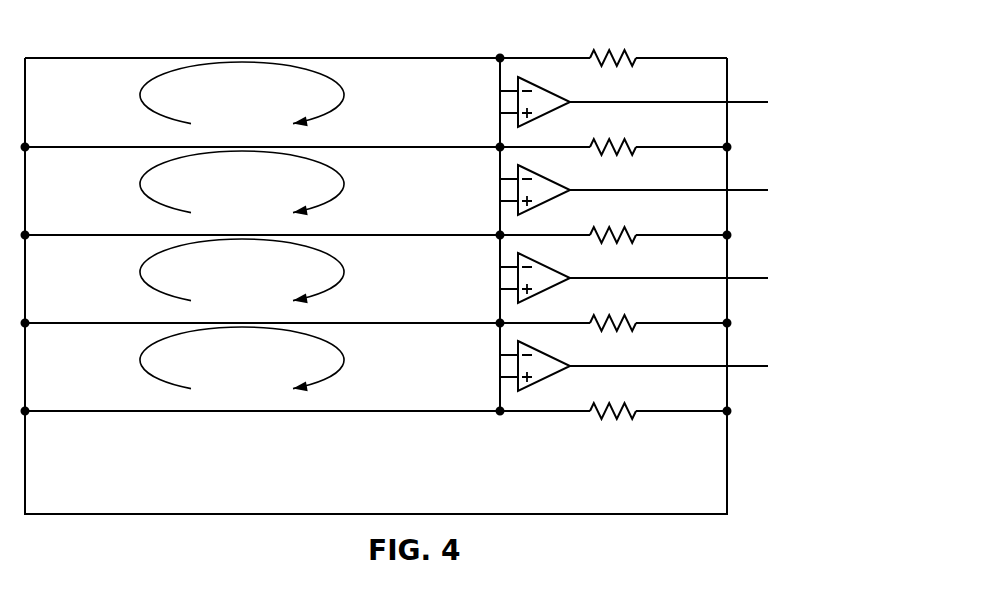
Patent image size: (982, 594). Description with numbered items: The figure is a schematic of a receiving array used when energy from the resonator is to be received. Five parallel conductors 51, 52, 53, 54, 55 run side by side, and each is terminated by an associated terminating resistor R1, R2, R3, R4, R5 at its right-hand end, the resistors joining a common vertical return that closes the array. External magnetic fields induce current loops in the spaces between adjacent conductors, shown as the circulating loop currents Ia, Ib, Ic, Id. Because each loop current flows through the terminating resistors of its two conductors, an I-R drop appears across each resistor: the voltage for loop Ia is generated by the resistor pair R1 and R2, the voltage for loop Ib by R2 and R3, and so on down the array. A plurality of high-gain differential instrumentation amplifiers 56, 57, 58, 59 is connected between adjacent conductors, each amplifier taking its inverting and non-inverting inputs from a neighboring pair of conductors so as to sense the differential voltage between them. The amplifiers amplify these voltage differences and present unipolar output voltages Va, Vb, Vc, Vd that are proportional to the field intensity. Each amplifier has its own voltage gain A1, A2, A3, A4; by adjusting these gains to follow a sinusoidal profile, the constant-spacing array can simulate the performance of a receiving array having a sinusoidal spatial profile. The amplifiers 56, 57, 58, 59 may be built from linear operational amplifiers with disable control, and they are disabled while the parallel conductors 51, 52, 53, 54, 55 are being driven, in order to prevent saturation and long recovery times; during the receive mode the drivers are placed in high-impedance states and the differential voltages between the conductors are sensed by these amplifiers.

The conductor 51 is at (376, 44).
The conductor 52 is at (376, 133).
The conductor 53 is at (376, 221).
The conductor 54 is at (376, 309).
The conductor 55 is at (376, 397).
The differential amplifier 56 is at (621, 103).
The differential amplifier 57 is at (623, 191).
The differential amplifier 58 is at (622, 279).
The differential amplifier 59 is at (623, 367).
The terminating resistor R1 is at (627, 46).
The terminating resistor R2 is at (627, 135).
The terminating resistor R3 is at (627, 223).
The terminating resistor R4 is at (627, 311).
The terminating resistor R5 is at (627, 399).
The voltage gain A1 is at (517, 97).
The voltage gain A2 is at (517, 185).
The voltage gain A3 is at (517, 273).
The voltage gain A4 is at (517, 361).
The output voltage Va is at (689, 101).
The output voltage Vb is at (690, 189).
The output voltage Vc is at (689, 277).
The output voltage Vd is at (690, 365).
The loop current Ia is at (242, 94).
The loop current Ib is at (242, 183).
The loop current Ic is at (242, 271).
The loop current Id is at (242, 359).